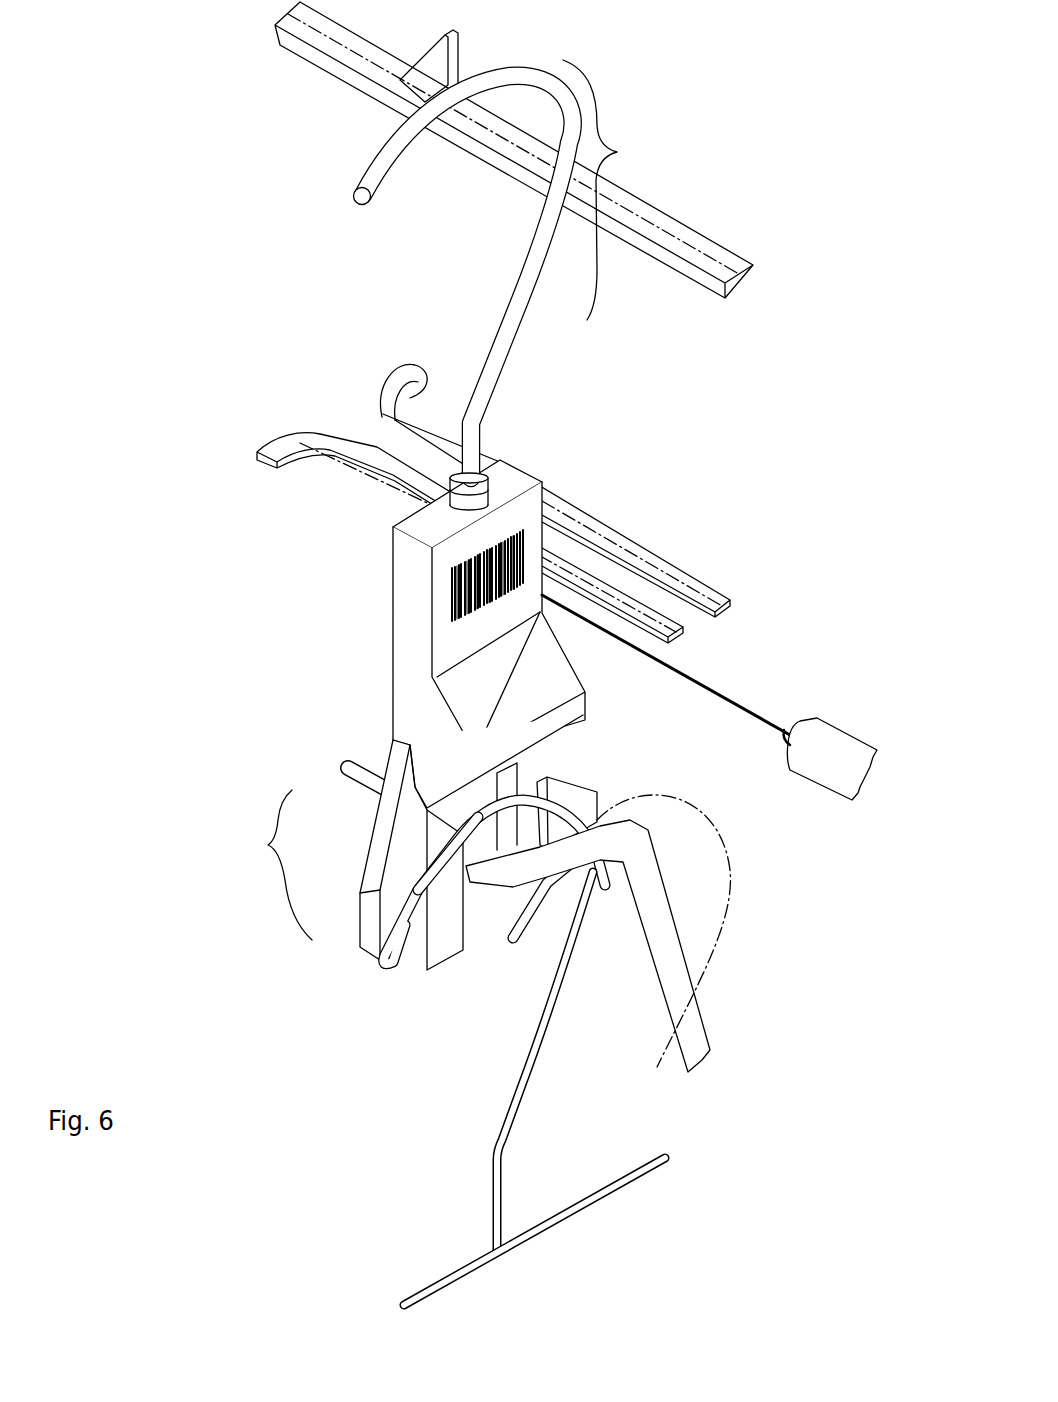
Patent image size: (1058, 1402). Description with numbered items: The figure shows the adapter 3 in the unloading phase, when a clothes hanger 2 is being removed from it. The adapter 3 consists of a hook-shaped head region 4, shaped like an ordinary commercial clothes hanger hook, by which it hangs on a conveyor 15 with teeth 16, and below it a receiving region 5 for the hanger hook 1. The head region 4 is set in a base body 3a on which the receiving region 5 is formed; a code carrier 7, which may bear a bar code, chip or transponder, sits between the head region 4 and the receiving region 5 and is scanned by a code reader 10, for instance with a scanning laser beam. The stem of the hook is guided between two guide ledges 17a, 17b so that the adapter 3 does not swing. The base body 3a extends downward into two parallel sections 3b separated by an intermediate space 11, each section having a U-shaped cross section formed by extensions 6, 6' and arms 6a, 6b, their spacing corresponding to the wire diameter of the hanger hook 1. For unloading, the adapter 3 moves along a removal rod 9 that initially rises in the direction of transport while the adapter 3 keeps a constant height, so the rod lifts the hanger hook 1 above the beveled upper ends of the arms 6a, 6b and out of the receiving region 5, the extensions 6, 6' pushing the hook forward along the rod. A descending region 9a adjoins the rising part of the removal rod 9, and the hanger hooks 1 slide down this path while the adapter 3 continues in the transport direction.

The hanger hook 1 is at (508, 1108).
The clothes hanger 2 is at (633, 1177).
The adapter 3 is at (433, 563).
The base body 3a is at (412, 618).
The sections 3b is at (410, 890).
The head region 4 is at (583, 474).
The receiving region 5 is at (345, 865).
The extension 6 is at (367, 850).
The arm 6a is at (446, 946).
The arm 6b is at (575, 815).
The extension 6' is at (543, 791).
The code carrier 7 is at (455, 578).
The removal rod 9 is at (360, 778).
The descending region 9a is at (695, 1035).
The code reader 10 is at (830, 750).
The intermediate space 11 is at (487, 790).
The conveyor 15 is at (680, 232).
The teeth 16 is at (430, 70).
The guide ledge 17a is at (703, 592).
The guide ledge 17b is at (680, 633).